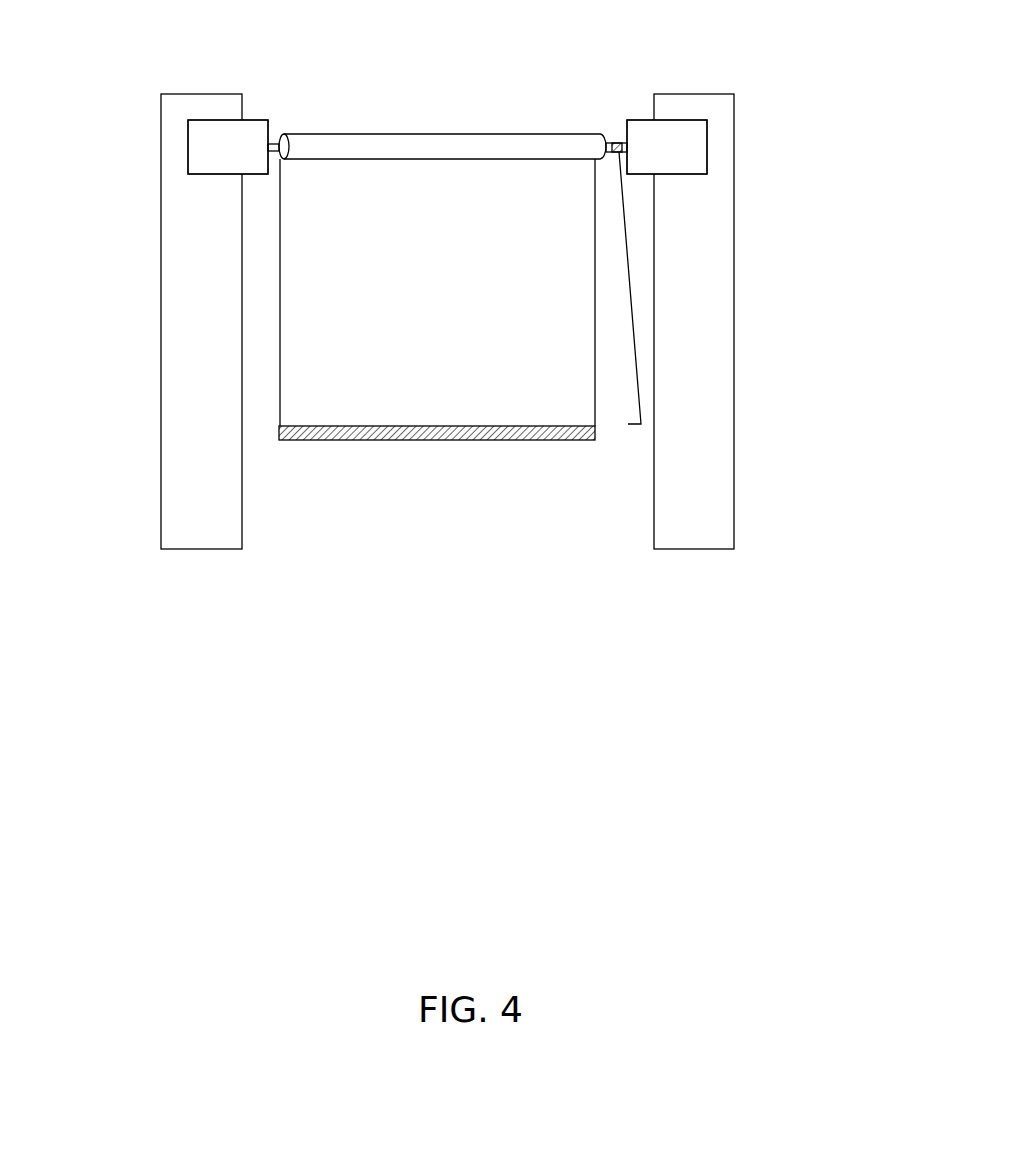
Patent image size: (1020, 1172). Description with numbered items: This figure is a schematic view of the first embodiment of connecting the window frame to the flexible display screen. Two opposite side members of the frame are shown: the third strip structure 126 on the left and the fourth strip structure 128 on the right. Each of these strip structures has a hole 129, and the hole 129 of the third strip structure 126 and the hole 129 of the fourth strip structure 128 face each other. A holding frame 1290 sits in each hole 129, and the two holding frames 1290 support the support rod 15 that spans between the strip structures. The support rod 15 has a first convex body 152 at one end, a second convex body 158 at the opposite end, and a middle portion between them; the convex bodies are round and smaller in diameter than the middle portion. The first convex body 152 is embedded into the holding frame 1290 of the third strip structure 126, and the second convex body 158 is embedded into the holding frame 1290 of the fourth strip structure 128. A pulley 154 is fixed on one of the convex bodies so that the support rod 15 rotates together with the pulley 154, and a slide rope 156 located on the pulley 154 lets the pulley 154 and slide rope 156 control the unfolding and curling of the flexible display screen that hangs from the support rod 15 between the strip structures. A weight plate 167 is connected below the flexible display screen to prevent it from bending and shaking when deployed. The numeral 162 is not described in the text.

The support rod 15 is at (390, 135).
The third strip structure 126 is at (177, 423).
The fourth strip structure 128 is at (722, 430).
The hole 129 is at (188, 125).
The holding frame 1290 is at (220, 153).
The first convex body 152 is at (277, 145).
The pulley 154 is at (609, 155).
The slide rope 156 is at (621, 177).
The second convex body 158 is at (617, 143).
The screen 162 is at (343, 290).
The weight plate 167 is at (595, 440).